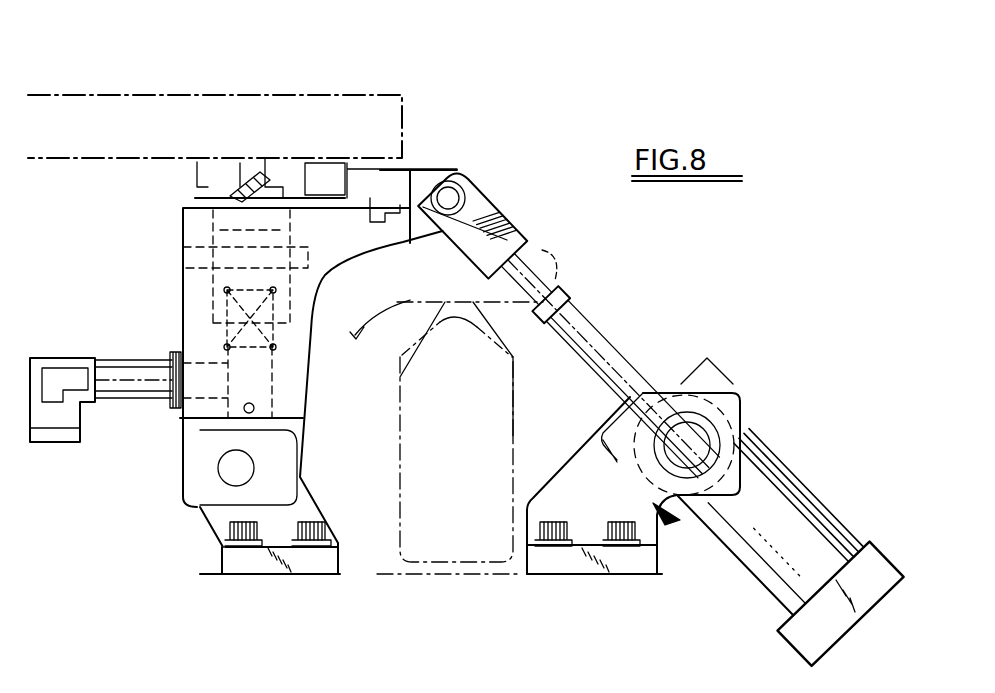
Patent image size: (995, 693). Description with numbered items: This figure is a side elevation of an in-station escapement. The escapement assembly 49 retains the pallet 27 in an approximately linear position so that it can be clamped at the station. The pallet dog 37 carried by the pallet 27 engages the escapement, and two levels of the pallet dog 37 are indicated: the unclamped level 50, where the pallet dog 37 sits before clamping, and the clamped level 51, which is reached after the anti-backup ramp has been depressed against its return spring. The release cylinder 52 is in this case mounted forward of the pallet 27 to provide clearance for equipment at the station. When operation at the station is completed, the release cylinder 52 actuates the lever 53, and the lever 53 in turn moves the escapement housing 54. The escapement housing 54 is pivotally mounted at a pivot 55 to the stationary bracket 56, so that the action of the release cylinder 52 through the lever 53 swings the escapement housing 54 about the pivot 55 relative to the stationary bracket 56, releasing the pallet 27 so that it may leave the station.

The pallet 27 is at (181, 95).
The pallet dog 37 is at (198, 173).
The unclamped level of pallet dog 50 is at (210, 188).
The clamped level of pallet dog 51 is at (291, 200).
The lever 53 is at (400, 238).
The escapement housing 54 is at (355, 250).
The escapement assembly 49 is at (520, 205).
The pivot 55 is at (255, 468).
The stationary bracket 56 is at (303, 507).
The release cylinder 52 is at (800, 478).